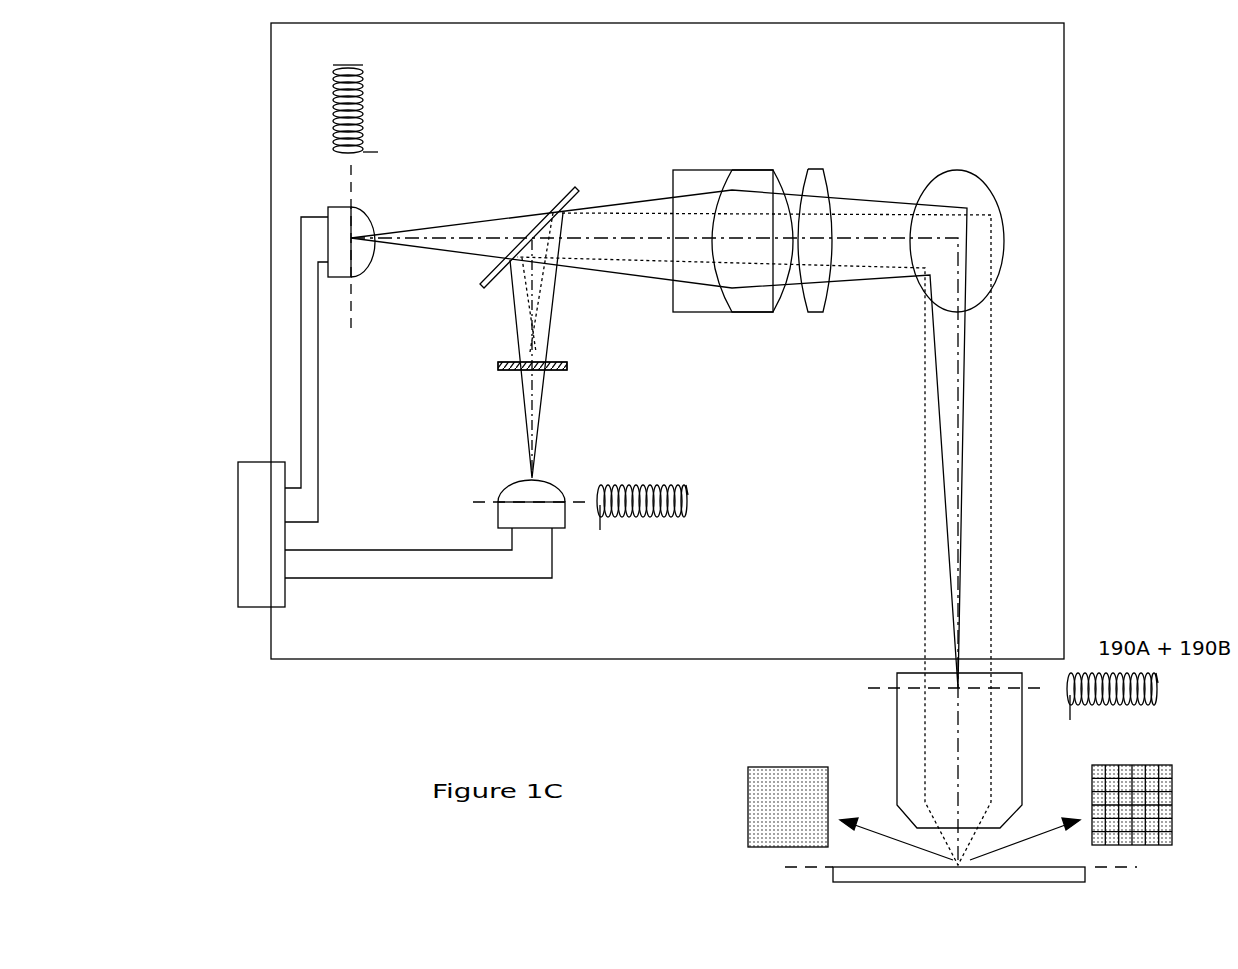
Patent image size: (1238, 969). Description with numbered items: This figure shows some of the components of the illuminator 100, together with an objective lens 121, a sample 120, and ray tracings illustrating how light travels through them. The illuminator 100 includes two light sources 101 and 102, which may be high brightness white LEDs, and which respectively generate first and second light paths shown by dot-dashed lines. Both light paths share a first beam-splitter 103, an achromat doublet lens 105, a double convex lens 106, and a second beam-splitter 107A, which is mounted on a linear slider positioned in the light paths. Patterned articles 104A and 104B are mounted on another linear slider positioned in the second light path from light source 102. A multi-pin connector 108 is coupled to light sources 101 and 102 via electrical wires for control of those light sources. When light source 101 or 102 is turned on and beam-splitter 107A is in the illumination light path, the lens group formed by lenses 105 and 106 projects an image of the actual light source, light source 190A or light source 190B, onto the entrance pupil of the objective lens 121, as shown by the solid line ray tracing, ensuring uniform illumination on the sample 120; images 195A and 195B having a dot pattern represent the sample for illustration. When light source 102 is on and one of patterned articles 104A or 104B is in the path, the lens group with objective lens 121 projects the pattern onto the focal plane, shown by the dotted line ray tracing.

The illuminator 100 is at (989, 79).
The light source 101 is at (375, 247).
The light source 102 is at (530, 489).
The first beam-splitter 103 is at (533, 218).
The patterned article 104A is at (570, 357).
The patterned article 104B is at (569, 378).
The achromat doublet lens 105 is at (733, 259).
The double convex lens 106 is at (819, 219).
The second beam-splitter 107A is at (972, 227).
The multi-pin connector 108 is at (384, 412).
The sample 120 is at (942, 891).
The objective lens 121 is at (935, 750).
The light source 190A is at (381, 109).
The light source 190B is at (677, 507).
The image 195A is at (757, 807).
The image 195B is at (1165, 805).